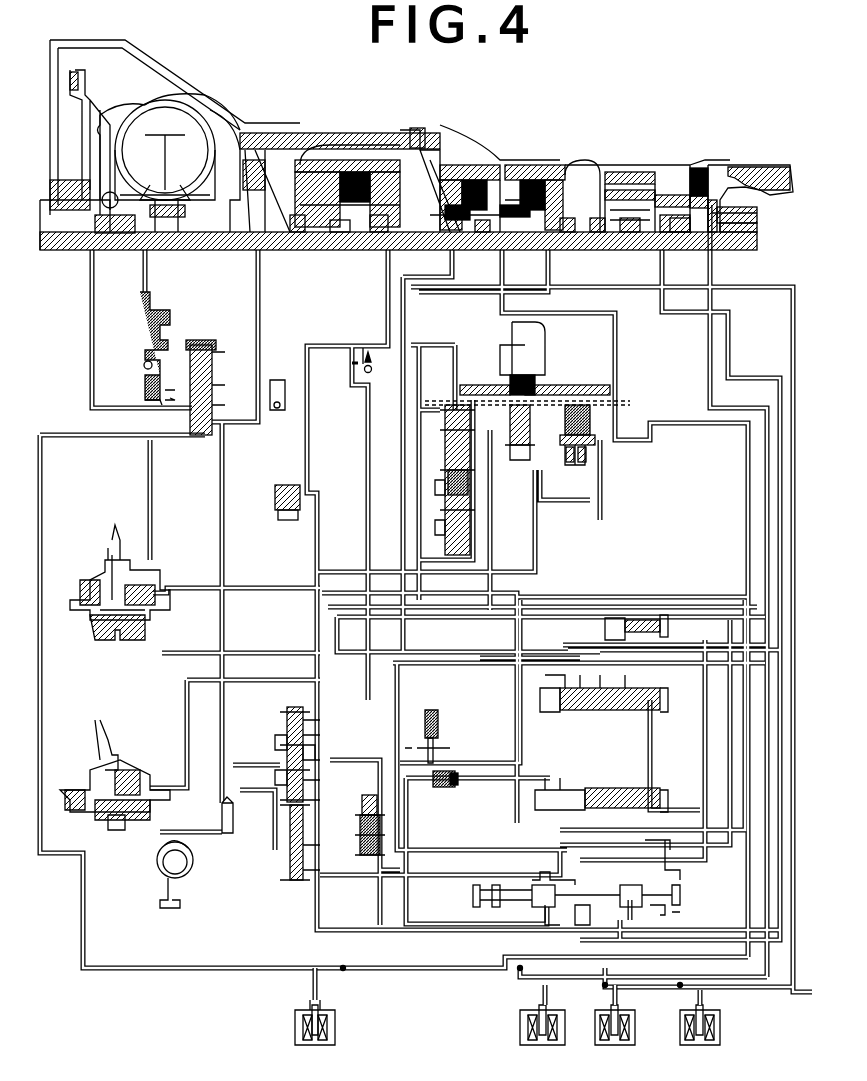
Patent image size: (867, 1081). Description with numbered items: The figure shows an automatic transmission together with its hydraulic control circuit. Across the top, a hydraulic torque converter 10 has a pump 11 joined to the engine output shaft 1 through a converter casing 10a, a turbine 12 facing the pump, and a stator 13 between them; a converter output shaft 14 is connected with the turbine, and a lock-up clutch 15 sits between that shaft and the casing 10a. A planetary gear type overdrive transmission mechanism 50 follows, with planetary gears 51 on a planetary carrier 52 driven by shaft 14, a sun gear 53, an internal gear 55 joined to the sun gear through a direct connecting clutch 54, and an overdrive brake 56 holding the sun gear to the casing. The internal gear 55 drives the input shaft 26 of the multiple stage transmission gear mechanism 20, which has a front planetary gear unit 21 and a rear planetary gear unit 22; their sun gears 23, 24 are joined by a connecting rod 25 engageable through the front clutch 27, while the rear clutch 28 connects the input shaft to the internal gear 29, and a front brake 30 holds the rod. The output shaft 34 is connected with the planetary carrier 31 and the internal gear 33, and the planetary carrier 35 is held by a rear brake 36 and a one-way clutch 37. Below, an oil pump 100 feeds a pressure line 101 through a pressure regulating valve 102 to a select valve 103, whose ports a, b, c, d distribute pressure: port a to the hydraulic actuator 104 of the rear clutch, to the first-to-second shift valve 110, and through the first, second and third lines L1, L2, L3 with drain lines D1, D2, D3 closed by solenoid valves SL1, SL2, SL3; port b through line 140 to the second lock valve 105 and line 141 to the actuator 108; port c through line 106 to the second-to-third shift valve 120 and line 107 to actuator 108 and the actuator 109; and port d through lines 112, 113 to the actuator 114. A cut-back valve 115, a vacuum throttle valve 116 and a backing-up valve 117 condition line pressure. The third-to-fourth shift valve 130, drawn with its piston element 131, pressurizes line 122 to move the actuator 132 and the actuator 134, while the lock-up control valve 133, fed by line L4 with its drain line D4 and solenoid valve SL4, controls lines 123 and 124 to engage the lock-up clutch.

The engine output shaft 1 is at (60, 255).
The hydraulic torque converter 10 is at (210, 115).
The converter casing 10a is at (185, 95).
The pump 11 is at (225, 130).
The turbine 12 is at (135, 110).
The stator 13 is at (180, 178).
The converter output shaft 14 is at (110, 255).
The lock-up clutch 15 is at (82, 140).
The multiple stage transmission gear mechanism 20 is at (555, 170).
The front planetary gear unit 21 is at (585, 170).
The rear planetary gear unit 22 is at (655, 170).
The sun gear 23 is at (556, 250).
The sun gear 24 is at (630, 250).
The connecting rod 25 is at (598, 250).
The input shaft 26 is at (500, 260).
The front clutch 27 is at (468, 170).
The rear clutch 28 is at (528, 168).
The internal gear 29 is at (605, 172).
The front brake 30 is at (490, 172).
The planetary carrier 31 is at (550, 295).
The internal gear 33 is at (665, 170).
The output shaft 34 is at (662, 295).
The planetary carrier 35 is at (620, 175).
The rear brake 36 is at (702, 168).
The one-way clutch 37 is at (680, 250).
The planetary gear type overdrive transmission mechanism 50 is at (340, 165).
The planetary gears 51 is at (285, 165).
The planetary carrier 52 is at (338, 250).
The sun gear 53 is at (300, 250).
The direct connecting clutch 54 is at (372, 175).
The internal gear 55 is at (310, 165).
The overdrive brake 56 is at (365, 170).
The oil pump 100 is at (165, 863).
The pressure line 101 is at (375, 575).
The pressure regulating valve 102 is at (283, 838).
The select valve 103 is at (530, 880).
The hydraulic actuator 104 is at (516, 250).
The second lock valve 105 is at (375, 790).
The pressure line 106 is at (478, 787).
The line 107 is at (503, 818).
The actuator 108 is at (97, 805).
The actuator 109 is at (462, 250).
The 1-2 shift valve 110 is at (580, 720).
The line 112 is at (725, 862).
The line 113 is at (615, 740).
The actuator 114 is at (716, 250).
The cut-back valve 115 is at (656, 605).
The vacuum throttle valve 116 is at (527, 395).
The valve 117 is at (600, 432).
The 2-3 shift valve 120 is at (610, 775).
The line 122 is at (375, 462).
The line 123 is at (228, 527).
The line 124 is at (90, 360).
The 3-4 shift valve 130 is at (444, 392).
The accumulator piston 131 is at (470, 475).
The actuator 132 is at (97, 640).
The lock-up control valve 133 is at (216, 345).
The actuator 134 is at (375, 250).
The line 140 is at (425, 830).
The line 141 is at (345, 728).
The port a is at (580, 910).
The port b is at (568, 885).
The port c is at (550, 920).
The port d is at (645, 912).
The first drain line D1 is at (540, 1008).
The second drain line D2 is at (625, 1003).
The third drain line D3 is at (705, 1003).
The drain line D4 is at (320, 990).
The first line L1 is at (710, 966).
The second line L2 is at (770, 985).
The third line L3 is at (792, 992).
The line L4 is at (128, 970).
The first solenoid valve SL1 is at (525, 1028).
The second solenoid valve SL2 is at (637, 1028).
The third solenoid valve SL3 is at (721, 1028).
The solenoid valve SL4 is at (336, 1028).